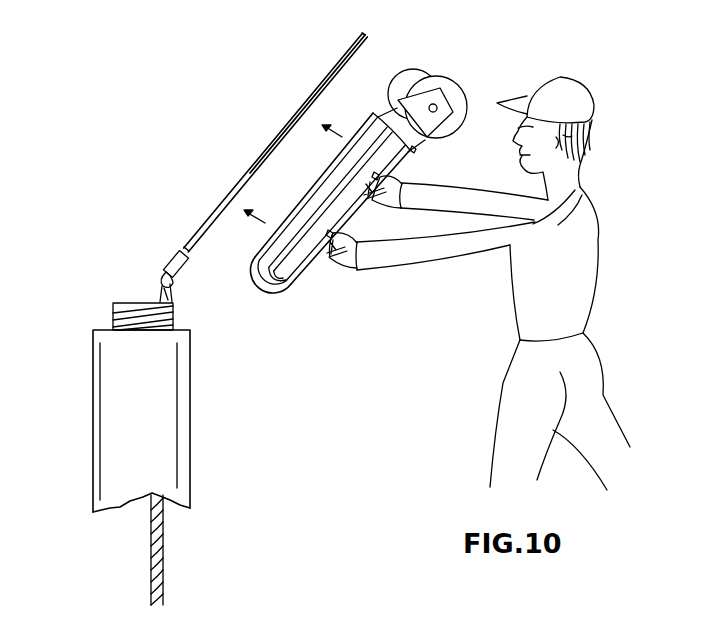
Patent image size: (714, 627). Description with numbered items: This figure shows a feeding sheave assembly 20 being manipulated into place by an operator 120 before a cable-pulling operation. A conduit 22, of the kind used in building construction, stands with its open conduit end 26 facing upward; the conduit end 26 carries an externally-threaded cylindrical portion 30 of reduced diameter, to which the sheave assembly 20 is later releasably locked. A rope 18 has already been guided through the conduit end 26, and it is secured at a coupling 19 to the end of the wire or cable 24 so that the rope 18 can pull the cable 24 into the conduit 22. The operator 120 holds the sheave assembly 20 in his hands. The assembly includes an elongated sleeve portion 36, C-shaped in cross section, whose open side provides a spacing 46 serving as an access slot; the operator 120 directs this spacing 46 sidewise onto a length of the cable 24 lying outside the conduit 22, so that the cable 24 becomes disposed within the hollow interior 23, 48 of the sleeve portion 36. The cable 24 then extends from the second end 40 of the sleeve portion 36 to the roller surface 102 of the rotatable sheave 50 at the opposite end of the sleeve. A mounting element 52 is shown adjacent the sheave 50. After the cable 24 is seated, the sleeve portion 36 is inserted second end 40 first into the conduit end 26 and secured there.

The rope 18 is at (165, 543).
The coupling 19 is at (163, 271).
The feeding sheave assembly 20 is at (511, 61).
The conduit 22 is at (182, 380).
The hollow interior 23 is at (283, 288).
The wire or cable 24 is at (297, 112).
The conduit end 26 is at (128, 301).
The externally-threaded cylindrical portion 30 is at (113, 315).
The sleeve portion 36 is at (338, 205).
The second end 40 is at (263, 285).
The spacing 46 is at (262, 237).
The interior of the sleeve portion 48 is at (322, 200).
The rotatable sheave 50 is at (458, 80).
The mounting block 52 is at (450, 117).
The roller surface 102 is at (408, 68).
The operator 120 is at (582, 227).